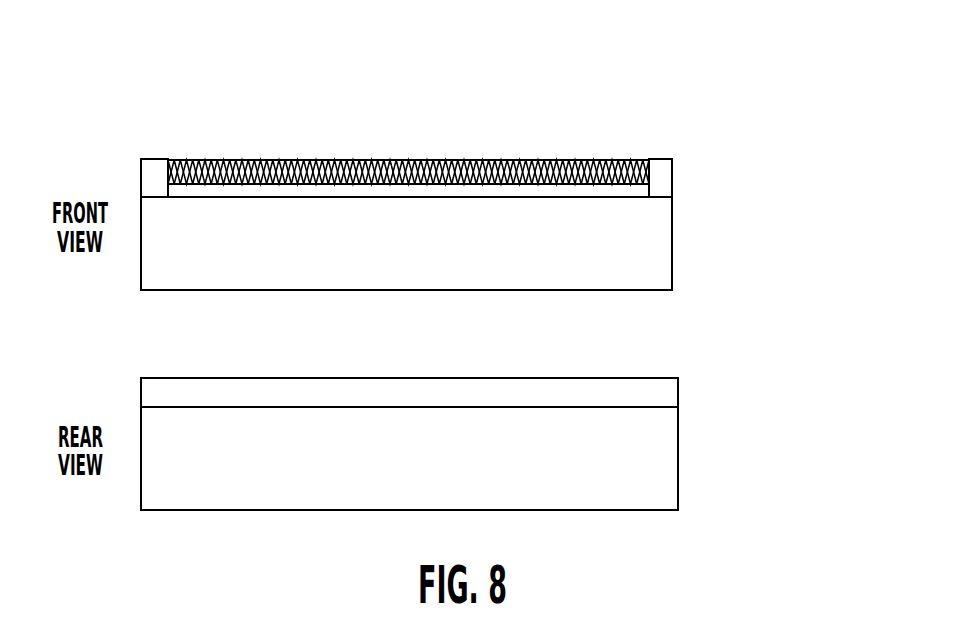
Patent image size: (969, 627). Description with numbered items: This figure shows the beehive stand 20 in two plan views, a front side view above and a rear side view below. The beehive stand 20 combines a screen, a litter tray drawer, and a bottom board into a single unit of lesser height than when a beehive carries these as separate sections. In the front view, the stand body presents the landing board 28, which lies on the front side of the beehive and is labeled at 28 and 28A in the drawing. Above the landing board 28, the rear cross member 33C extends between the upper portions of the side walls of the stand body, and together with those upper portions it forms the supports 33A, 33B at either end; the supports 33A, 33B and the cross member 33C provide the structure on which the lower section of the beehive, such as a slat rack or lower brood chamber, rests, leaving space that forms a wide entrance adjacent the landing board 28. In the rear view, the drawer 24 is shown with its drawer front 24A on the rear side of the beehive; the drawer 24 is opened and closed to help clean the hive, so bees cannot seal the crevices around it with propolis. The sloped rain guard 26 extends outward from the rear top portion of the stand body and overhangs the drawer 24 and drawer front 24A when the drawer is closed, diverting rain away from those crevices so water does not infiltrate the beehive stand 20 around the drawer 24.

The beehive stand 20 is at (764, 96).
The drawer 24 is at (678, 447).
The drawer front 24A is at (590, 503).
The rain guard 26 is at (620, 393).
The landing board 28 is at (178, 235).
The landing board side 28A is at (655, 249).
The support 33A is at (666, 157).
The support 33B is at (155, 175).
The rear cross member 33C is at (363, 158).